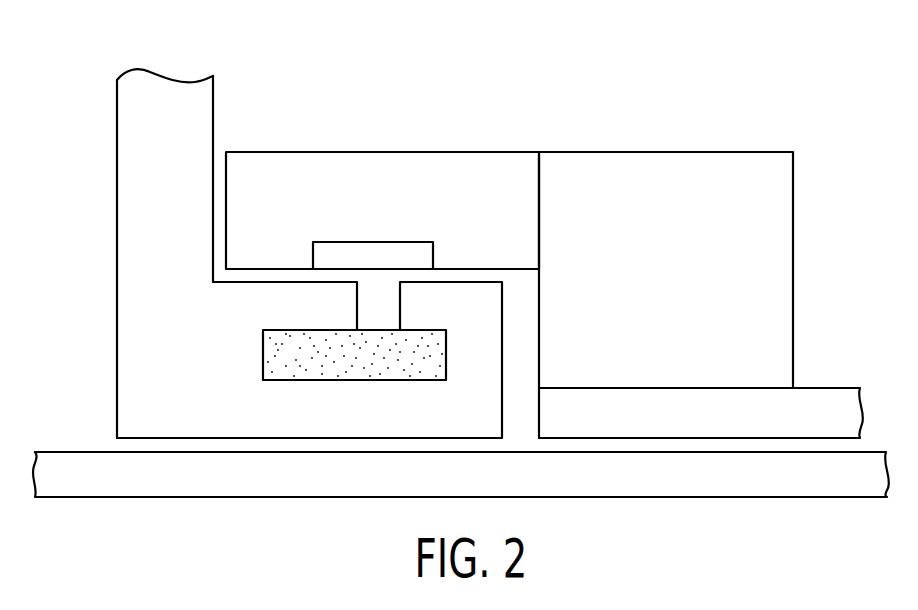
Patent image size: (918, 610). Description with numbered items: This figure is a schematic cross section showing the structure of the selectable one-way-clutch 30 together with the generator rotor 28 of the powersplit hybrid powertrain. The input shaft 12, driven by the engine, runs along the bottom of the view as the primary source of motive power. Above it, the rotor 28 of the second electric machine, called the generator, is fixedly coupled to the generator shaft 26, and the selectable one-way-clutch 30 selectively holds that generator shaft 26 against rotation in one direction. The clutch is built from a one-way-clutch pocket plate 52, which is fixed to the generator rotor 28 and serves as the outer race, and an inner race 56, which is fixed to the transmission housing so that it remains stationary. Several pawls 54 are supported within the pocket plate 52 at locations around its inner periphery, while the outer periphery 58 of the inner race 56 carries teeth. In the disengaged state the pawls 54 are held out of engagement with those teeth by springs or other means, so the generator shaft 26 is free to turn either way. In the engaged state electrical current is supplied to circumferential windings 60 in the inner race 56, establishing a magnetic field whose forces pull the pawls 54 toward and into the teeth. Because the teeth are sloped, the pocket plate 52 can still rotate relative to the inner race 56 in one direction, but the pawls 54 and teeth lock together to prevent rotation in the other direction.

The input shaft 12 is at (60, 452).
The generator shaft 26 is at (827, 388).
The rotor 28 is at (629, 168).
The selectable one-way-clutch 30 is at (377, 82).
The pocket plate 52 is at (486, 168).
The pawls 54 is at (357, 242).
The inner race 56 is at (139, 179).
The outer periphery 58 is at (288, 282).
The circumferential windings 60 is at (263, 355).